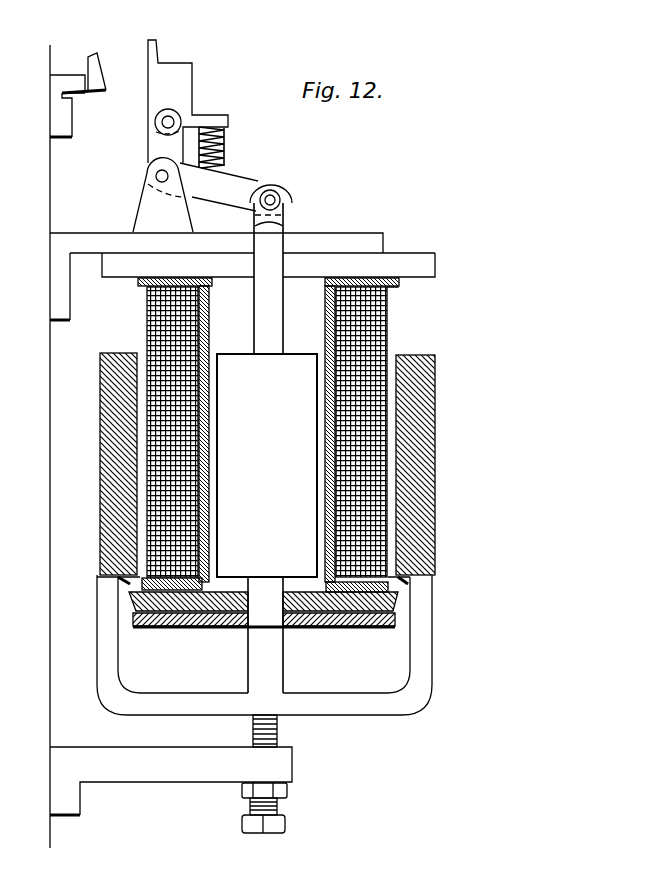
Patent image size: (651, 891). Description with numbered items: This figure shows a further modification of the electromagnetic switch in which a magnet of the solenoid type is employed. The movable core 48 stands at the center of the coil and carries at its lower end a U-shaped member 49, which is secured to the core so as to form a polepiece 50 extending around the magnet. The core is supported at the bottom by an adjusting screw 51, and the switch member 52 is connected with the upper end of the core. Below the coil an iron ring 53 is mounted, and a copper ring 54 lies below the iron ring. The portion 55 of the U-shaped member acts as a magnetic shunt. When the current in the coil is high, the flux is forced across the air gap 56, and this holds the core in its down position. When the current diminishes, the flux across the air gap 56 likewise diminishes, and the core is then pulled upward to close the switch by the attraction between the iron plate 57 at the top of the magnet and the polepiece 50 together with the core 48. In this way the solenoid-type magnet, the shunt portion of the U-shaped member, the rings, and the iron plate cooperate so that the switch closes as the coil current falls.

The movable core 48 is at (285, 364).
The U-shaped member 49 is at (188, 696).
The polepiece 50 is at (100, 417).
The adjusting screw 51 is at (253, 729).
The switch member 52 is at (152, 97).
The iron ring 53 is at (130, 599).
The copper ring 54 is at (162, 627).
The portion of the U-shaped member 55 is at (118, 672).
The air gap 56 is at (112, 574).
The iron plate 57 is at (402, 255).